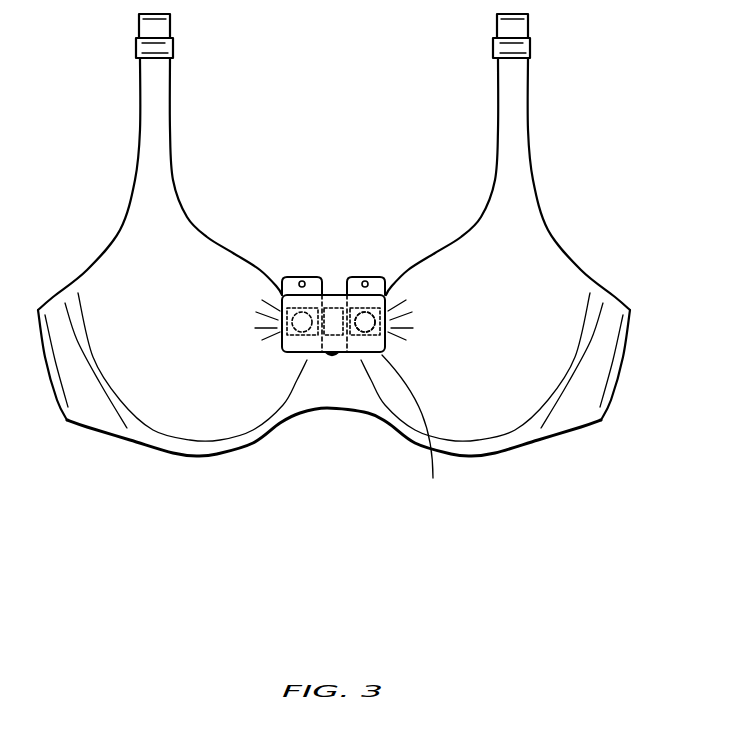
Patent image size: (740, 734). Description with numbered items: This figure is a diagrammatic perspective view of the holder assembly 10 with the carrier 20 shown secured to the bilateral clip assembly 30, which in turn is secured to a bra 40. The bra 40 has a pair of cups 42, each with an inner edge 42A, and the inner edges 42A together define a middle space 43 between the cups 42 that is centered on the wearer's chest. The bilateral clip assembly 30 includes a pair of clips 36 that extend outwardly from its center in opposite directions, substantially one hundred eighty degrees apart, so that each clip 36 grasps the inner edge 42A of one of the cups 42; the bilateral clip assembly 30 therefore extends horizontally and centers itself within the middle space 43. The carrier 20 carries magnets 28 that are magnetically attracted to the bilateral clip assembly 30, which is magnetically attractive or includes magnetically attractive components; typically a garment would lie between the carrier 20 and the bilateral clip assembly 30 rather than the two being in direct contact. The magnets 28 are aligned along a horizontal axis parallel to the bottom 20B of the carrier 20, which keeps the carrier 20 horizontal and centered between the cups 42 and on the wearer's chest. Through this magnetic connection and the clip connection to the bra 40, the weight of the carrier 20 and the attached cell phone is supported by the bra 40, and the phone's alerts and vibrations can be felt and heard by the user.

The holder assembly 10 is at (352, 206).
The carrier 20 is at (292, 355).
The bottom of the carrier 20B is at (288, 439).
The magnets 28 is at (352, 312).
The bilateral clip assembly 30 is at (362, 333).
The clips 36 is at (305, 281).
The bra 40 is at (94, 426).
The cups 42 is at (218, 440).
The inner edge 42A is at (232, 247).
The middle space 43 is at (416, 428).